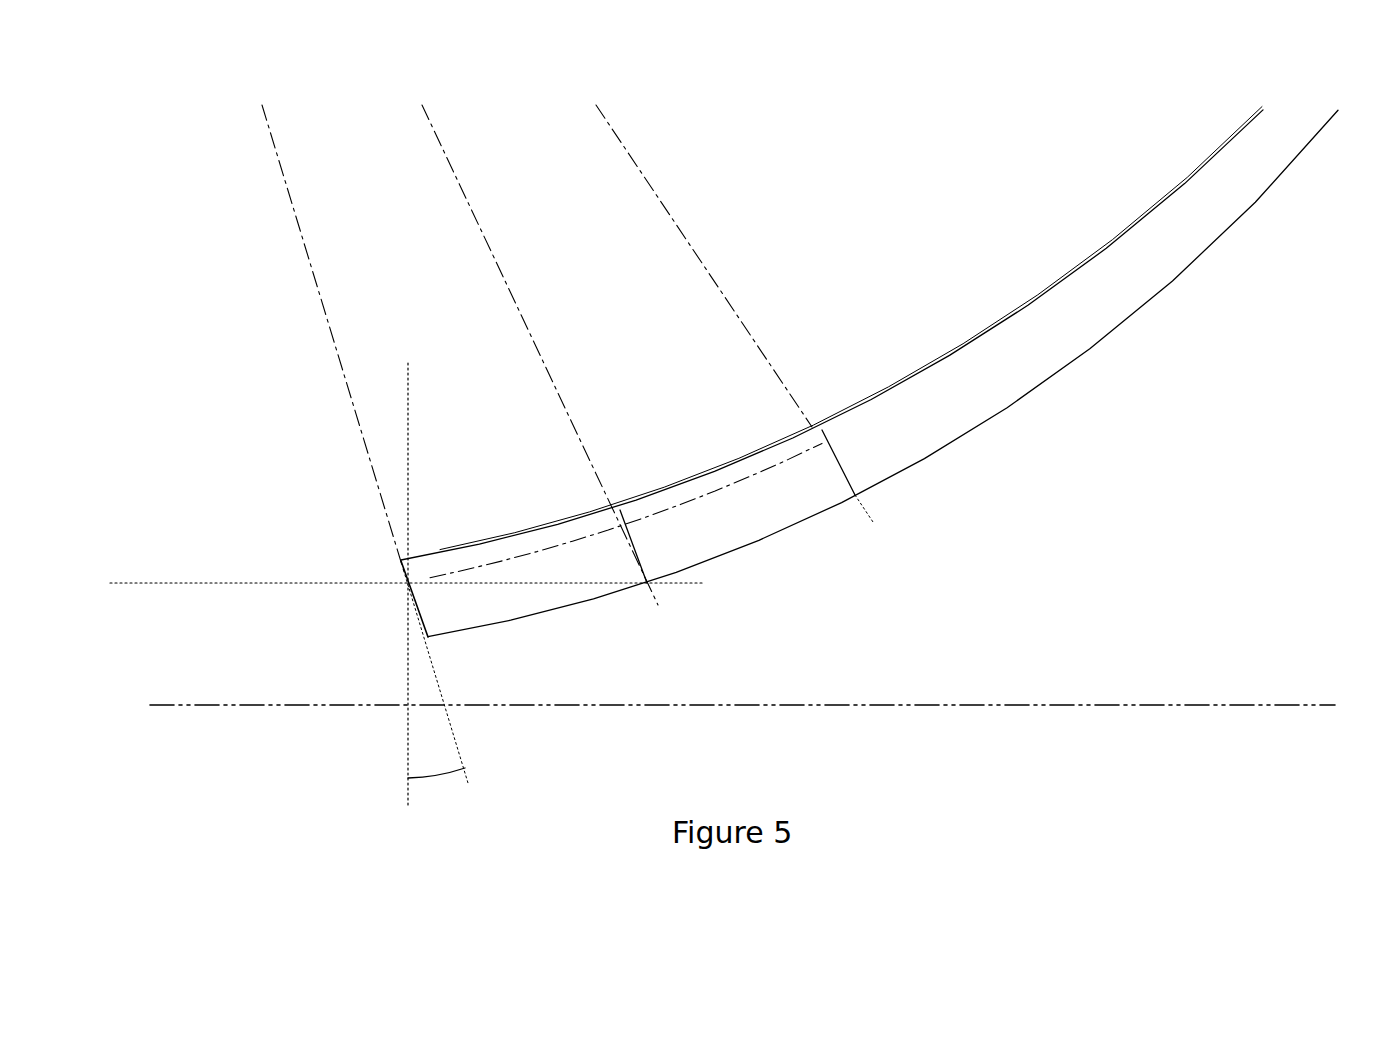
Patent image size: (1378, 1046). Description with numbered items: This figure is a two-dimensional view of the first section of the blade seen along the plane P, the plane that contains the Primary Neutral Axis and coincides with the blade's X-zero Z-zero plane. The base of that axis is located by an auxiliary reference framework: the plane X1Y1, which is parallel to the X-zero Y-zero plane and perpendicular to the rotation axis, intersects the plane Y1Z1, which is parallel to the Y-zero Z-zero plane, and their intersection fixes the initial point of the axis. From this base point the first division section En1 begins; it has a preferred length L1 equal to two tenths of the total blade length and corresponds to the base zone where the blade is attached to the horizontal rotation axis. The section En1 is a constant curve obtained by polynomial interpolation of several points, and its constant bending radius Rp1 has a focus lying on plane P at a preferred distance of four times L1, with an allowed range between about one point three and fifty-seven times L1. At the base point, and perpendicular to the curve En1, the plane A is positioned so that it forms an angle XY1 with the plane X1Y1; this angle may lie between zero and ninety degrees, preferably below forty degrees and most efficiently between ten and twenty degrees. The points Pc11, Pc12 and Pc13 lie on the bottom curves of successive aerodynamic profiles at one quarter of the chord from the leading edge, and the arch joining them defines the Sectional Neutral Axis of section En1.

The constant bending radius Rp1 is at (525, 320).
The first division section En1 is at (753, 477).
The plane P is at (1150, 500).
The length of first division section L1 is at (520, 557).
The point on aerodynamic profile PA11 Pc11 is at (408, 582).
The point on aerodynamic profile PA12 Pc12 is at (622, 520).
The point on aerodynamic profile PA13 Pc13 is at (822, 430).
The plane Y1Z1 is at (160, 453).
The plane X1Y1 is at (226, 658).
The plane A is at (452, 723).
The angle XY1 is at (438, 779).